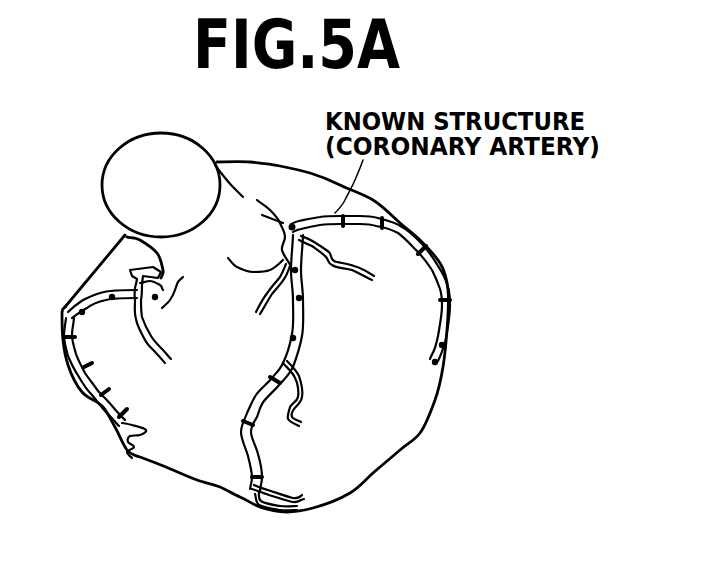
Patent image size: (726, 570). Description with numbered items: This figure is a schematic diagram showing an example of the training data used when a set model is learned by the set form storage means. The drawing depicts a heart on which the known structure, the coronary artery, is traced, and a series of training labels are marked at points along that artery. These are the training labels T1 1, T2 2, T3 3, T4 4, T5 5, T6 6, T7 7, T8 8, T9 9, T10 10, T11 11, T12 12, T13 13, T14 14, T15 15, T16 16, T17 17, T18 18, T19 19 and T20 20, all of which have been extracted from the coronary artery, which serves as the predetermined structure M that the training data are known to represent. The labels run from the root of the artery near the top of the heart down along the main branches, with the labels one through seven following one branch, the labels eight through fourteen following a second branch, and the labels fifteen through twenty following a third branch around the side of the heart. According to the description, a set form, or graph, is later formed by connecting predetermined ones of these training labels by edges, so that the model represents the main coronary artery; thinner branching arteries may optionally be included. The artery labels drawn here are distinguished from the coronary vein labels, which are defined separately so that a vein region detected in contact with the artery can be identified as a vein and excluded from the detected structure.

The training label T1 1 is at (156, 309).
The training label T2 2 is at (109, 282).
The training label T3 3 is at (72, 298).
The training label T4 4 is at (60, 342).
The training label T5 5 is at (96, 355).
The training label T6 6 is at (113, 382).
The training label T7 7 is at (132, 403).
The training label T8 8 is at (294, 211).
The training label T9 9 is at (306, 267).
The training label T10 10 is at (317, 297).
The training label T11 11 is at (276, 335).
The training label T12 12 is at (258, 372).
The training label T13 13 is at (231, 412).
The training label T14 14 is at (272, 467).
The training label T15 15 is at (348, 234).
The training label T16 16 is at (388, 210).
The training label T17 17 is at (439, 243).
The training label T18 18 is at (459, 305).
The training label T19 19 is at (459, 343).
The training label T20 20 is at (417, 372).